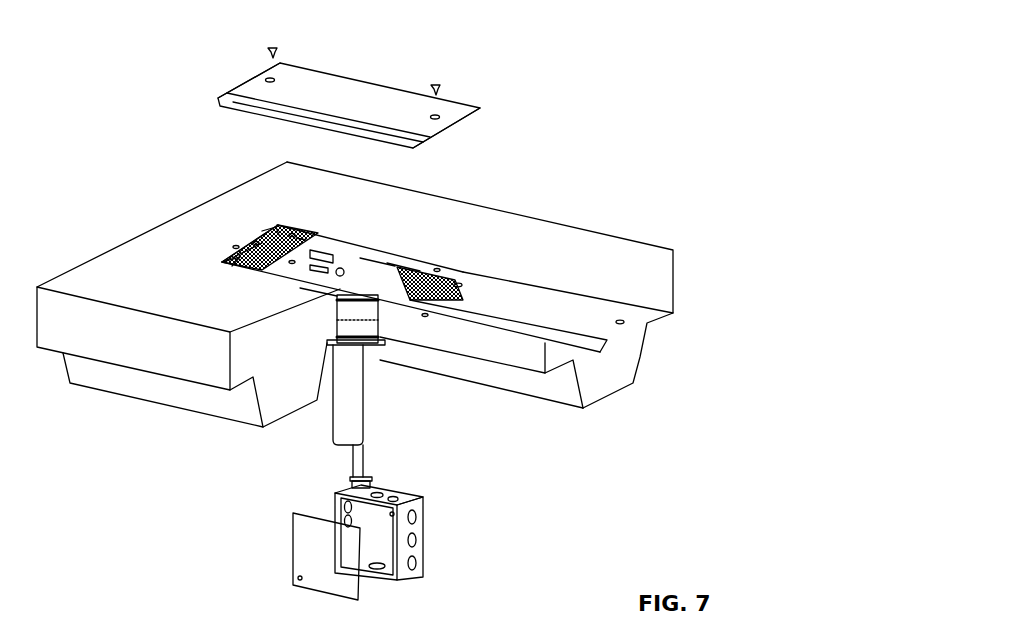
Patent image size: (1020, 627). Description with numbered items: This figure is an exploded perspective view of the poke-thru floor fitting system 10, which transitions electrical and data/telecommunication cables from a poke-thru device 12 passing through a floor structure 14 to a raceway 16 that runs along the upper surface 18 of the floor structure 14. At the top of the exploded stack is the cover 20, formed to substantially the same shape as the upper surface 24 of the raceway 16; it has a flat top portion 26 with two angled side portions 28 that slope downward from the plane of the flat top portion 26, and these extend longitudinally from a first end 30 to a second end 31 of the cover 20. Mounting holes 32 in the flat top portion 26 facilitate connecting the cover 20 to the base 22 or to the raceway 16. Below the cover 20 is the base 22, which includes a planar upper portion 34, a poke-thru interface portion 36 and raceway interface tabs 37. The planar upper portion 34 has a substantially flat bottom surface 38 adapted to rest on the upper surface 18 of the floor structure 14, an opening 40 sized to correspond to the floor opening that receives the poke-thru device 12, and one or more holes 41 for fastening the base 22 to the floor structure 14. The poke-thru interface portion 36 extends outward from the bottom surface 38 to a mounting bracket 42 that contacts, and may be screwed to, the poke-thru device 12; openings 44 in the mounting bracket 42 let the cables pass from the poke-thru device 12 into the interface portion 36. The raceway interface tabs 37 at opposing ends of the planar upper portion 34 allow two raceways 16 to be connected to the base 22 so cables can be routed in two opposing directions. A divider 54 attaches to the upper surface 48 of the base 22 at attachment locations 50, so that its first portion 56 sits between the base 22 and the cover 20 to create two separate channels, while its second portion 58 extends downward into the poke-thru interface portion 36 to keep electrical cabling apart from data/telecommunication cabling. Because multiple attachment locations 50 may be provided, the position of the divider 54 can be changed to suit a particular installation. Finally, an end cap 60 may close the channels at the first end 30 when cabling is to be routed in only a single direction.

The poke-thru floor fitting system 10 is at (215, 45).
The poke-thru device 12 is at (344, 381).
The floor structure 14 is at (506, 285).
The raceway 16 is at (607, 347).
The upper surface 18 is at (90, 270).
The cover 20 is at (357, 92).
The base 22 is at (262, 272).
The upper surface 24 is at (520, 293).
The flat top portion 26 is at (308, 88).
The angled side portions 28 is at (238, 104).
The first end 30 is at (247, 81).
The second end 31 is at (430, 133).
The mounting holes 32 is at (268, 78).
The planar upper portion 34 is at (332, 270).
The poke-thru interface portion 36 is at (380, 333).
The raceway interface tabs 37 is at (236, 245).
The bottom surface 38 is at (318, 274).
The opening 40 is at (333, 290).
The holes 41 is at (292, 232).
The mounting bracket 42 is at (330, 340).
The openings 44 is at (318, 402).
The upper surface 48 is at (408, 268).
The attachment locations 50 is at (300, 240).
The divider 54 is at (370, 262).
The first portion 56 is at (276, 227).
The second portion 58 is at (352, 267).
The end cap 60 is at (232, 248).